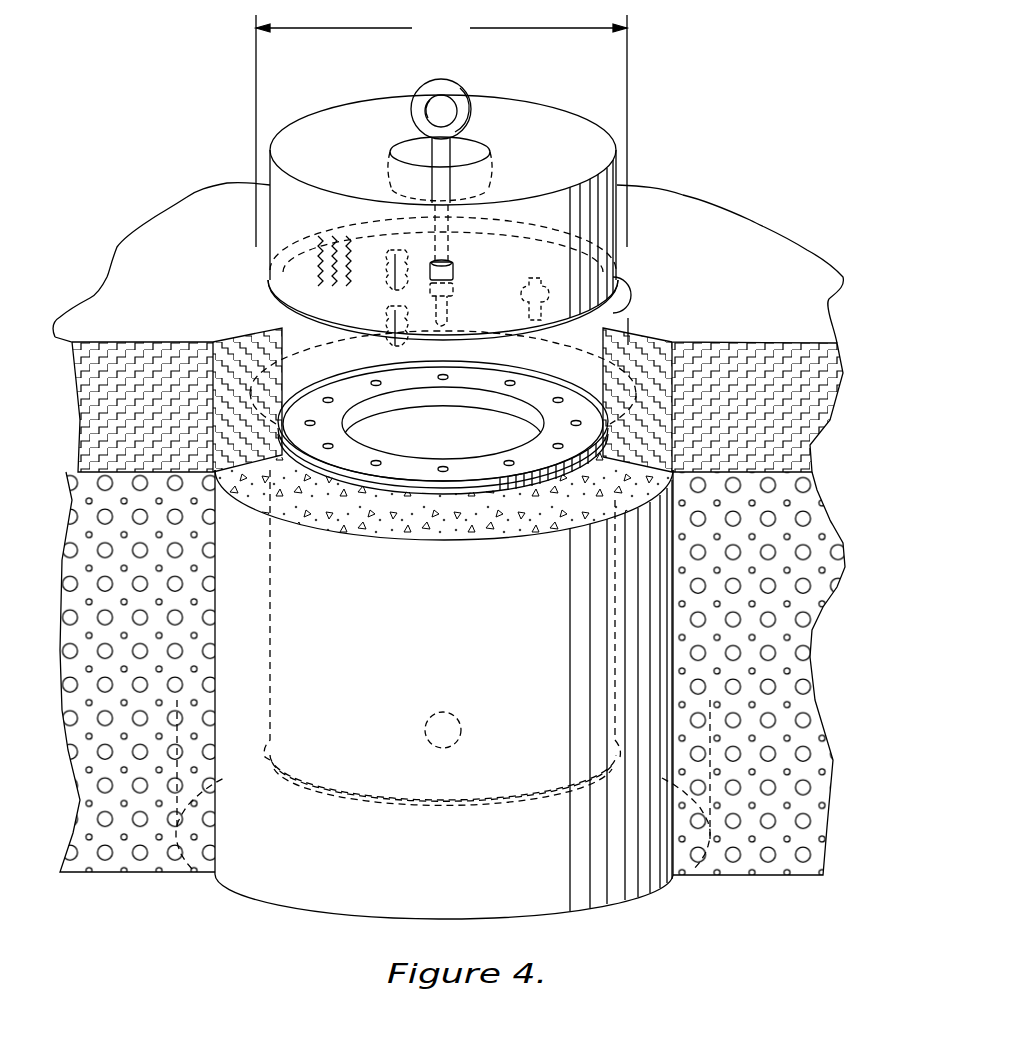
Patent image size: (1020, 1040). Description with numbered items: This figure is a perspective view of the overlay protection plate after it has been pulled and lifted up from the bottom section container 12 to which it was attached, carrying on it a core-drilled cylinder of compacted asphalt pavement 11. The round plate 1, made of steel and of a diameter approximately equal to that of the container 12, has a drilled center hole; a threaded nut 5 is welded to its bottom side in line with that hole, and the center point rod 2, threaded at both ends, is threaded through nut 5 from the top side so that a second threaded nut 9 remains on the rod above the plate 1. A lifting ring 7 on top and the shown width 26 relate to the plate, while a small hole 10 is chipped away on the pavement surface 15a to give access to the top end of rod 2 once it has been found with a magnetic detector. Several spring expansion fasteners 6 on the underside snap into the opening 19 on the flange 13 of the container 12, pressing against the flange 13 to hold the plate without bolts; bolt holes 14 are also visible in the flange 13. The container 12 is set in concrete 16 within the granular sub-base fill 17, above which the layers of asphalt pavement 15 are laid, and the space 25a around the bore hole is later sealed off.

The plate 1 is at (540, 327).
The center point rod 2 is at (450, 247).
The threaded nut 5 is at (450, 293).
The spring expansion fasteners 6 is at (387, 257).
The lifting ring 7 is at (458, 85).
The threaded nut 9 is at (453, 268).
The small hole 10 is at (478, 138).
The core-drilled compacted asphalt cylinder 11 is at (273, 280).
The bottom section container 12 is at (362, 787).
The flange 13 is at (475, 377).
The bolt holes 14 is at (377, 383).
The asphalt pavement 15 is at (798, 403).
The surface 15a is at (717, 343).
The concrete 16 is at (372, 527).
The granular sub-base fill 17 is at (112, 873).
The opening 19 is at (440, 397).
The space 25a is at (626, 290).
The cap diameter 26 is at (441, 131).